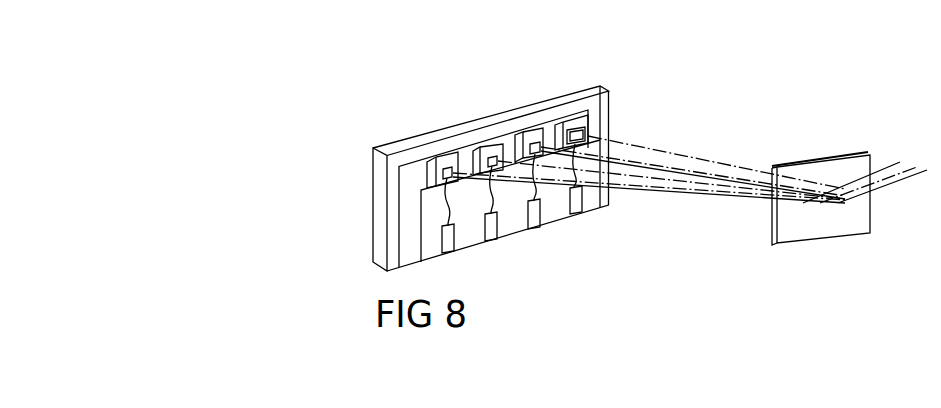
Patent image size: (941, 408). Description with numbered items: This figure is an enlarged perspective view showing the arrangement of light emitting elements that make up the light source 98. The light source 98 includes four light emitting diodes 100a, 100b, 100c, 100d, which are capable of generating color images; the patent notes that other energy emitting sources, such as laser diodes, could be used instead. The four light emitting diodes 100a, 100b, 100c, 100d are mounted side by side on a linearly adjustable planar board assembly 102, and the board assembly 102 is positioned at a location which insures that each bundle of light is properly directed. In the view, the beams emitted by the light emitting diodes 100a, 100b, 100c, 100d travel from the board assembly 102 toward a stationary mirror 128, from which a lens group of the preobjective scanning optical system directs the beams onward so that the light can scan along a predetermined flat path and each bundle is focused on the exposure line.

The light source 98 is at (722, 107).
The light emitting diode 100a is at (448, 160).
The light emitting diode 100b is at (494, 147).
The light emitting diode 100c is at (540, 129).
The light emitting diode 100d is at (589, 118).
The linearly adjustable planar board assembly 102 is at (377, 198).
The stationary mirror 128 is at (828, 238).